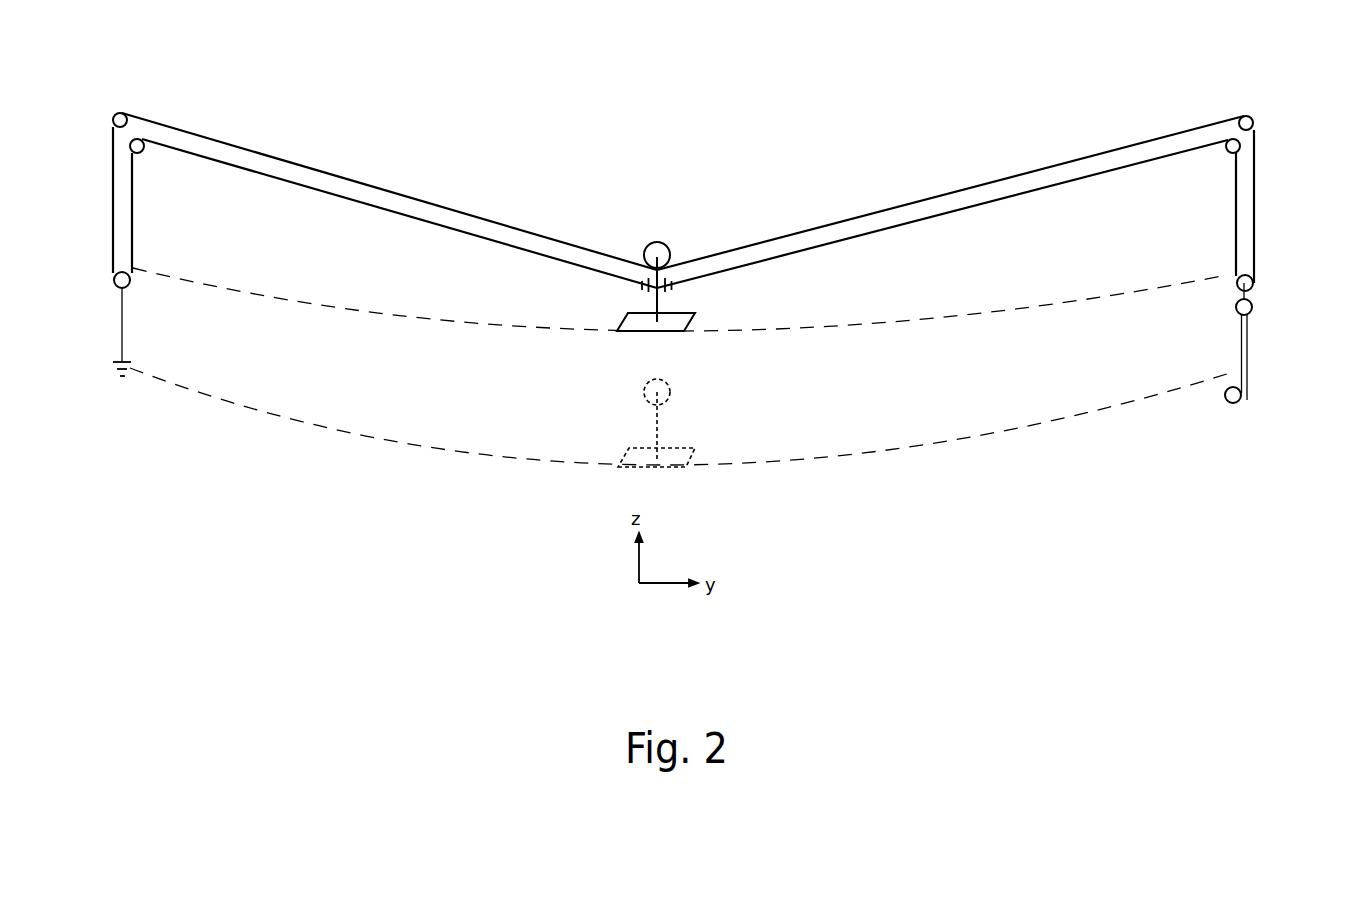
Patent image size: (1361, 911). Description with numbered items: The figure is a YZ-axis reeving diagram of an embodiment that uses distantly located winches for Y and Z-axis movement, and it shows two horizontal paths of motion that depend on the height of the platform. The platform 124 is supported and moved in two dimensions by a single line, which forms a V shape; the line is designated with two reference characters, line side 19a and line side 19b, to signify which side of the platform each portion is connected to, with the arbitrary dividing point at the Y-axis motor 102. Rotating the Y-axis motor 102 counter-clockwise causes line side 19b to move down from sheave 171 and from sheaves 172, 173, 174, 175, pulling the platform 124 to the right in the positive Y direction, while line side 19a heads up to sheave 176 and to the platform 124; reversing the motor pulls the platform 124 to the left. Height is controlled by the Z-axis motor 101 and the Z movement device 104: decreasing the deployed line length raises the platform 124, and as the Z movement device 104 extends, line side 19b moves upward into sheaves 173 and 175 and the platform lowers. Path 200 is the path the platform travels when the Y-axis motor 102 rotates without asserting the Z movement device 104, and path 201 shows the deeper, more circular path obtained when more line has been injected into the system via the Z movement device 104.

The YZ movement line side 19a is at (140, 232).
The YZ movement line side 19b is at (105, 202).
The Z-axis motor 101 is at (1217, 397).
The Y-axis motor 102 is at (137, 292).
The Z movement device 104 is at (1221, 304).
The platform 124 is at (682, 342).
The sheave 171 is at (117, 103).
The sheave 172 is at (653, 235).
The sheave 173 is at (1245, 110).
The sheave 174 is at (1262, 288).
The sheave 175 is at (1223, 153).
The sheave 176 is at (143, 157).
The path 200 is at (497, 335).
The path 201 is at (475, 468).